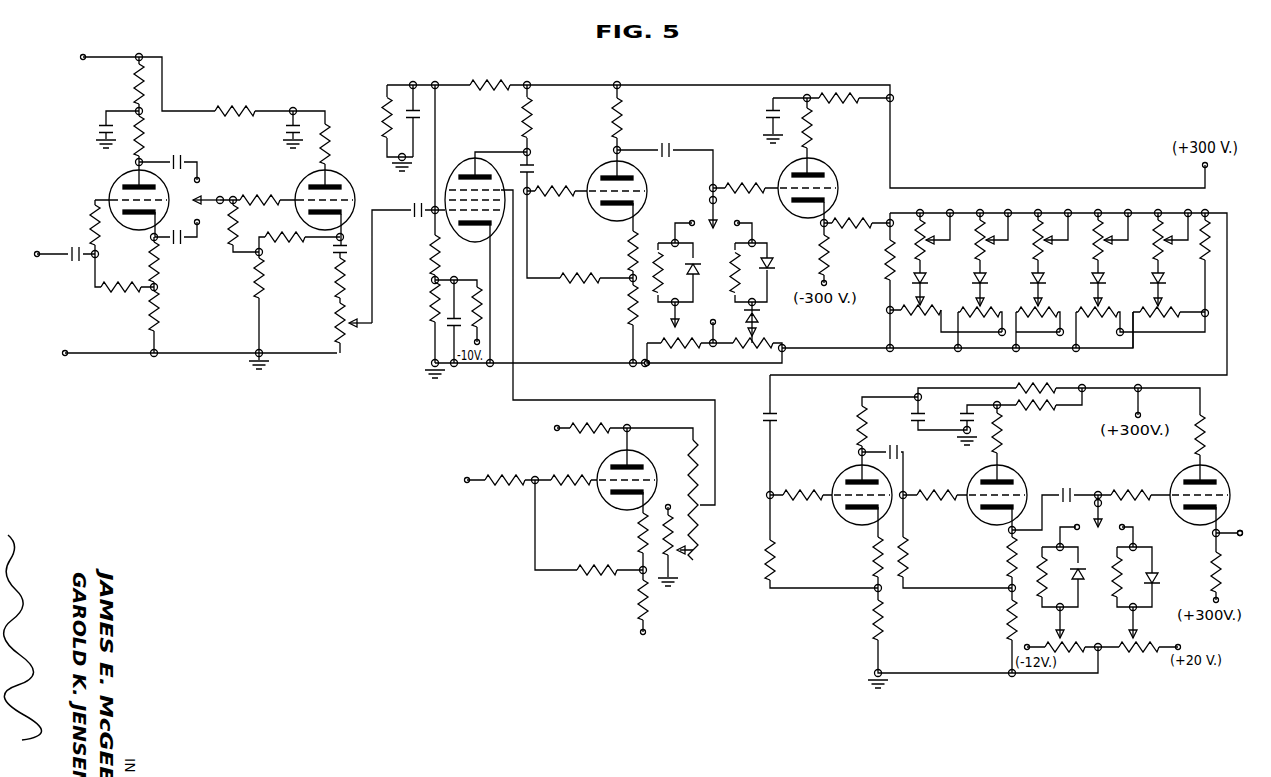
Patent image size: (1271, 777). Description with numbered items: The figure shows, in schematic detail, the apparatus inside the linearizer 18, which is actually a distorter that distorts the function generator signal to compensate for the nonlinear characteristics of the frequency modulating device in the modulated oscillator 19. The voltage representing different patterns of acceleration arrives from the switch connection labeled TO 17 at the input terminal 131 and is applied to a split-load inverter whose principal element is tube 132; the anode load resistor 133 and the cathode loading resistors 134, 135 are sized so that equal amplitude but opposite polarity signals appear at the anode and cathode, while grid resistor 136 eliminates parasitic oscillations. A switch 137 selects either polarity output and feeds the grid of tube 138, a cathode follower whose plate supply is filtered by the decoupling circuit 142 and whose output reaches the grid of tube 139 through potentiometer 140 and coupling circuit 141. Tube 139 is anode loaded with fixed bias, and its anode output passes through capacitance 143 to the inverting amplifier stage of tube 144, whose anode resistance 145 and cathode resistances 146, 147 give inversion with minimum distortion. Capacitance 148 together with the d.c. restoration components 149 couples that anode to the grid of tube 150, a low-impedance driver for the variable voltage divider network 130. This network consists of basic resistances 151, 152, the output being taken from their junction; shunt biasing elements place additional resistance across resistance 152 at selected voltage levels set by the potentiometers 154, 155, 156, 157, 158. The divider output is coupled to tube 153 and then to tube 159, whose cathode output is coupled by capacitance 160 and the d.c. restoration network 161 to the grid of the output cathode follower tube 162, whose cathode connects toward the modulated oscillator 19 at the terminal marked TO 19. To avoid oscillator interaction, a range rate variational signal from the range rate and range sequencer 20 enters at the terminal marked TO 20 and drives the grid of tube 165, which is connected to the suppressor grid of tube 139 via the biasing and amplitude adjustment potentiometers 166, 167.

The connection to element 17 is at (32, 245).
The linearizer 18 is at (578, 578).
The modulated oscillator 19 is at (1252, 526).
The range rate and range sequencer 20 is at (447, 472).
The variable voltage divider arrangement 130 is at (998, 282).
The input terminal 131 is at (37, 262).
The tube 132 is at (140, 229).
The anode load resistor 133 is at (144, 129).
The cathode loading resistor 134 is at (160, 262).
The cathode loading resistor 135 is at (160, 312).
The grid resistor 136 is at (91, 216).
The switch 137 is at (204, 195).
The tube 138 is at (354, 178).
The tube 139 is at (478, 243).
The potentiometer 140 is at (345, 326).
The coupling circuit 141 is at (414, 216).
The plate supply decoupling or filtration circuit 142 is at (286, 127).
The capacitance 143 is at (536, 167).
The tube 144 is at (612, 224).
The anode resistance 145 is at (621, 118).
The cathode resistance 146 is at (628, 257).
The cathode resistance 147 is at (627, 312).
The capacitance 148 is at (670, 148).
The d.c. restoration components 149 is at (727, 287).
The tube 150 is at (812, 223).
The resistance 151 is at (866, 229).
The resistance 152 is at (831, 262).
The tube 153 is at (848, 521).
The potentiometer 154 is at (932, 315).
The potentiometer 155 is at (992, 313).
The potentiometer 156 is at (1050, 313).
The potentiometer 157 is at (1110, 313).
The potentiometer 158 is at (1165, 309).
The tube 159 is at (978, 521).
The capacitance 160 is at (1073, 488).
The d.c. restoration network 161 is at (1105, 628).
The output cathode follower tube 162 is at (1187, 522).
The tube 165 is at (612, 508).
The potentiometer 166 is at (678, 555).
The potentiometer 167 is at (698, 512).